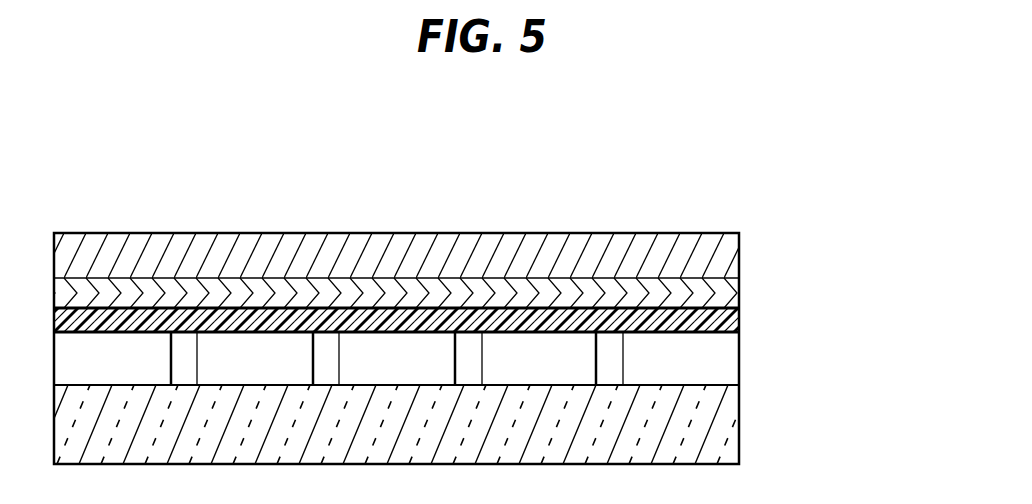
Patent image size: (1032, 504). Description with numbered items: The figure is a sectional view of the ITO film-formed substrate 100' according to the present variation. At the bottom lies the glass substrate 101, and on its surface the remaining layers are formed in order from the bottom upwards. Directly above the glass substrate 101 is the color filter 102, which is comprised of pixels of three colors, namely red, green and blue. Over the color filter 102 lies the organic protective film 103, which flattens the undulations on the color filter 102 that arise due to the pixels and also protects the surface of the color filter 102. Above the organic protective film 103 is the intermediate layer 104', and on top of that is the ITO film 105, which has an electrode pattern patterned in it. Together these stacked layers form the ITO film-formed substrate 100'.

The ITO film-formed substrate 100' is at (493, 341).
The glass substrate 101 is at (720, 423).
The color filter 102 is at (722, 363).
The organic protective film 103 is at (740, 321).
The intermediate layer 104' is at (454, 292).
The ITO film 105 is at (720, 250).